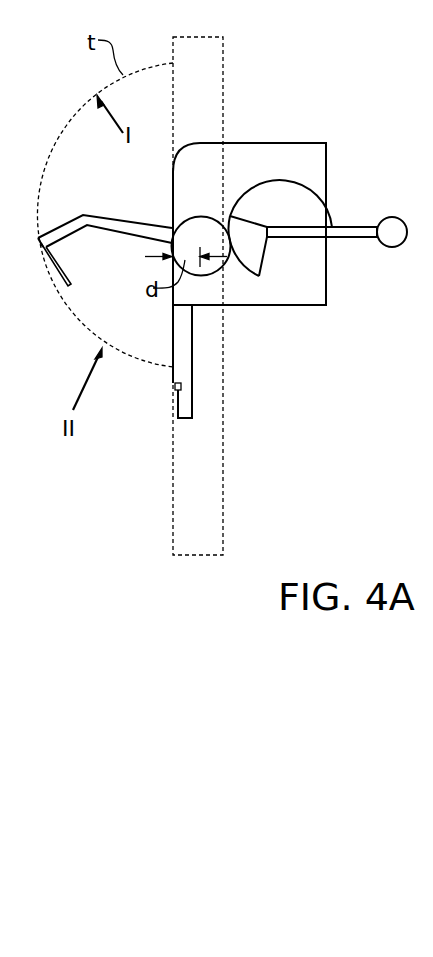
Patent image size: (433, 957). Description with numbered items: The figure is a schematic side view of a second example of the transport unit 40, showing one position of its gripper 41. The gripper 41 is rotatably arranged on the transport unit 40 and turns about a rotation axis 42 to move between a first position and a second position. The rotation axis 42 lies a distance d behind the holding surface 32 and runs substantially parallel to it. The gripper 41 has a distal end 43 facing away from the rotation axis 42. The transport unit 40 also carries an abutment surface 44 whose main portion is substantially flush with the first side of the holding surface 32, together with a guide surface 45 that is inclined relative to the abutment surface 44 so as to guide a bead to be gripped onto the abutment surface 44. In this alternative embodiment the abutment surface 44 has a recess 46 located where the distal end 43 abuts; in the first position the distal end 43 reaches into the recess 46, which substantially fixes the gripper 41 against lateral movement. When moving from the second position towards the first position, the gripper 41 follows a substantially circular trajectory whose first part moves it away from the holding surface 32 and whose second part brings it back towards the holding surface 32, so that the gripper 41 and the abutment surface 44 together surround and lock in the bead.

The holding surface 32 is at (173, 523).
The transport unit 40 is at (285, 150).
The gripper 41 is at (113, 224).
The rotation axis 42 is at (208, 243).
The distal end 43 is at (67, 283).
The abutment surface 44 is at (185, 341).
The guide surface 45 is at (175, 407).
The recess 46 is at (173, 385).